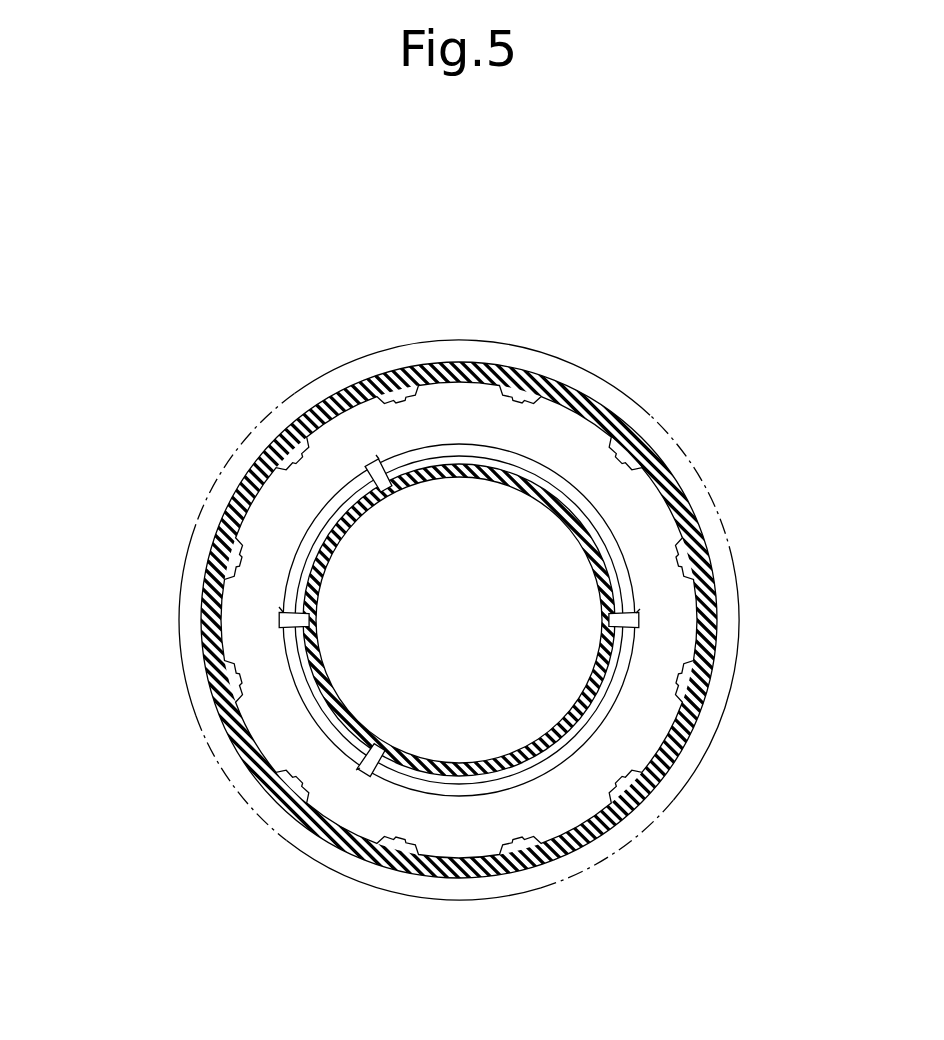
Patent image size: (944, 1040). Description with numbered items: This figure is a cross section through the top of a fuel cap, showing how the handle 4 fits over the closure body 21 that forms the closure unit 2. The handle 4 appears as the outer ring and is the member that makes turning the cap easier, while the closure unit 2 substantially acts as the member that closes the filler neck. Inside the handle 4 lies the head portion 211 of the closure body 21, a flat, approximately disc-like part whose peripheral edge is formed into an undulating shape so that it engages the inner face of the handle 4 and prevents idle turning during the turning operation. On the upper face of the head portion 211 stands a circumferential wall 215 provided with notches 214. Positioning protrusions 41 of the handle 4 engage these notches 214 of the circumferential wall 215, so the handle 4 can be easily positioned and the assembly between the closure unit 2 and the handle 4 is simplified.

The closure unit 2 is at (405, 647).
The handle 4 is at (646, 383).
The closure body 21 is at (461, 624).
The positioning protrusions 41 is at (372, 462).
The head portion 211 is at (567, 797).
The notches 214 is at (378, 462).
The circumferential wall 215 is at (625, 670).